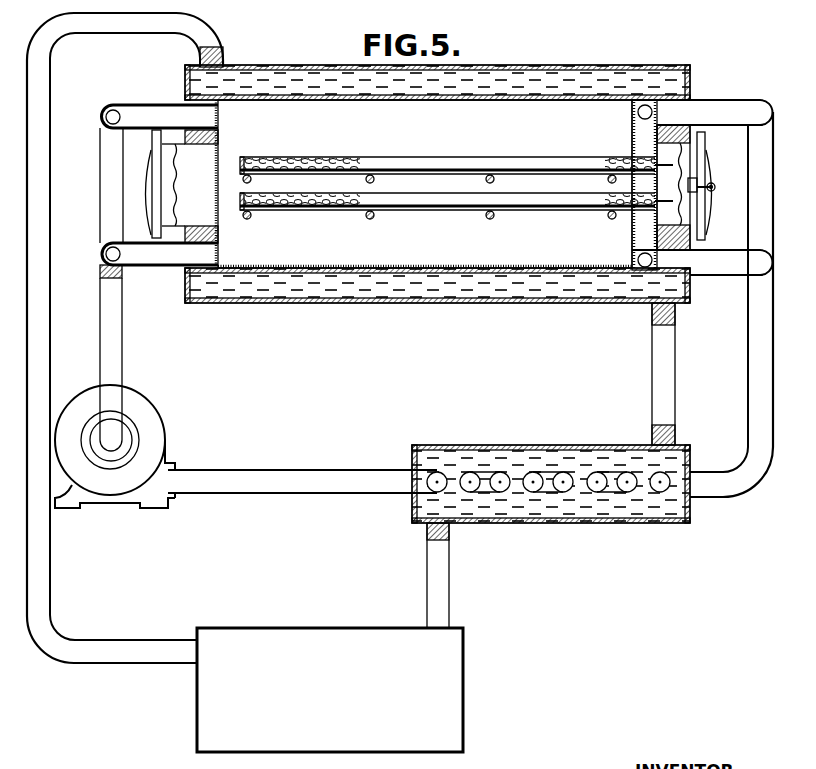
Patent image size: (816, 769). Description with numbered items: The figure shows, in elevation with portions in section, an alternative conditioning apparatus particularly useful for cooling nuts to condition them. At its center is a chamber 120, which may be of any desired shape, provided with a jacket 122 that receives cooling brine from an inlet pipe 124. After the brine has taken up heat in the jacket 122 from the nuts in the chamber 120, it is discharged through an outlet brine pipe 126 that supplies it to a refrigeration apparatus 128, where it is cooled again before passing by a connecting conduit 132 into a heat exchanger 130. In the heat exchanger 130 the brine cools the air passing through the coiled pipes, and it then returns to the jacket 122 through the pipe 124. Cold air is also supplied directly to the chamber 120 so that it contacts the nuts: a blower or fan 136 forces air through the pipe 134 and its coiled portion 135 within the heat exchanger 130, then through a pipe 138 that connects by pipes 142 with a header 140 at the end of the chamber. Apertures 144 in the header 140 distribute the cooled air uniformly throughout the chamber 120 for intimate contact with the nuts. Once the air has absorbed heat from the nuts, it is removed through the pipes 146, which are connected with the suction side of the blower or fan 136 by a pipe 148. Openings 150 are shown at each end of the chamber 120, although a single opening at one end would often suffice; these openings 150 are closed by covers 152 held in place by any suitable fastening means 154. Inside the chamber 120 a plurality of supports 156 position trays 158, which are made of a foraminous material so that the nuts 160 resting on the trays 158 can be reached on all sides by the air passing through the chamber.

The chamber 120 is at (515, 100).
The jacket 122 is at (524, 67).
The inlet pipe 124 is at (655, 386).
The outlet brine pipe 126 is at (48, 96).
The refrigeration apparatus 128 is at (456, 680).
The heat exchanger 130 is at (572, 523).
The connecting conduit 132 is at (446, 596).
The pipe 134 is at (368, 469).
The coiled portion 135 is at (562, 473).
The blower or fan 136 is at (157, 432).
The pipe 138 is at (752, 398).
The header 140 is at (632, 136).
The pipes 142 is at (722, 102).
The apertures 144 is at (632, 224).
The pipes 146 is at (150, 90).
The pipe 148 is at (122, 347).
The openings 150 is at (207, 163).
The covers 152 is at (150, 198).
The fastening means 154 is at (714, 191).
The supports 156 is at (250, 218).
The trays 158 is at (430, 165).
The nuts 160 is at (303, 197).